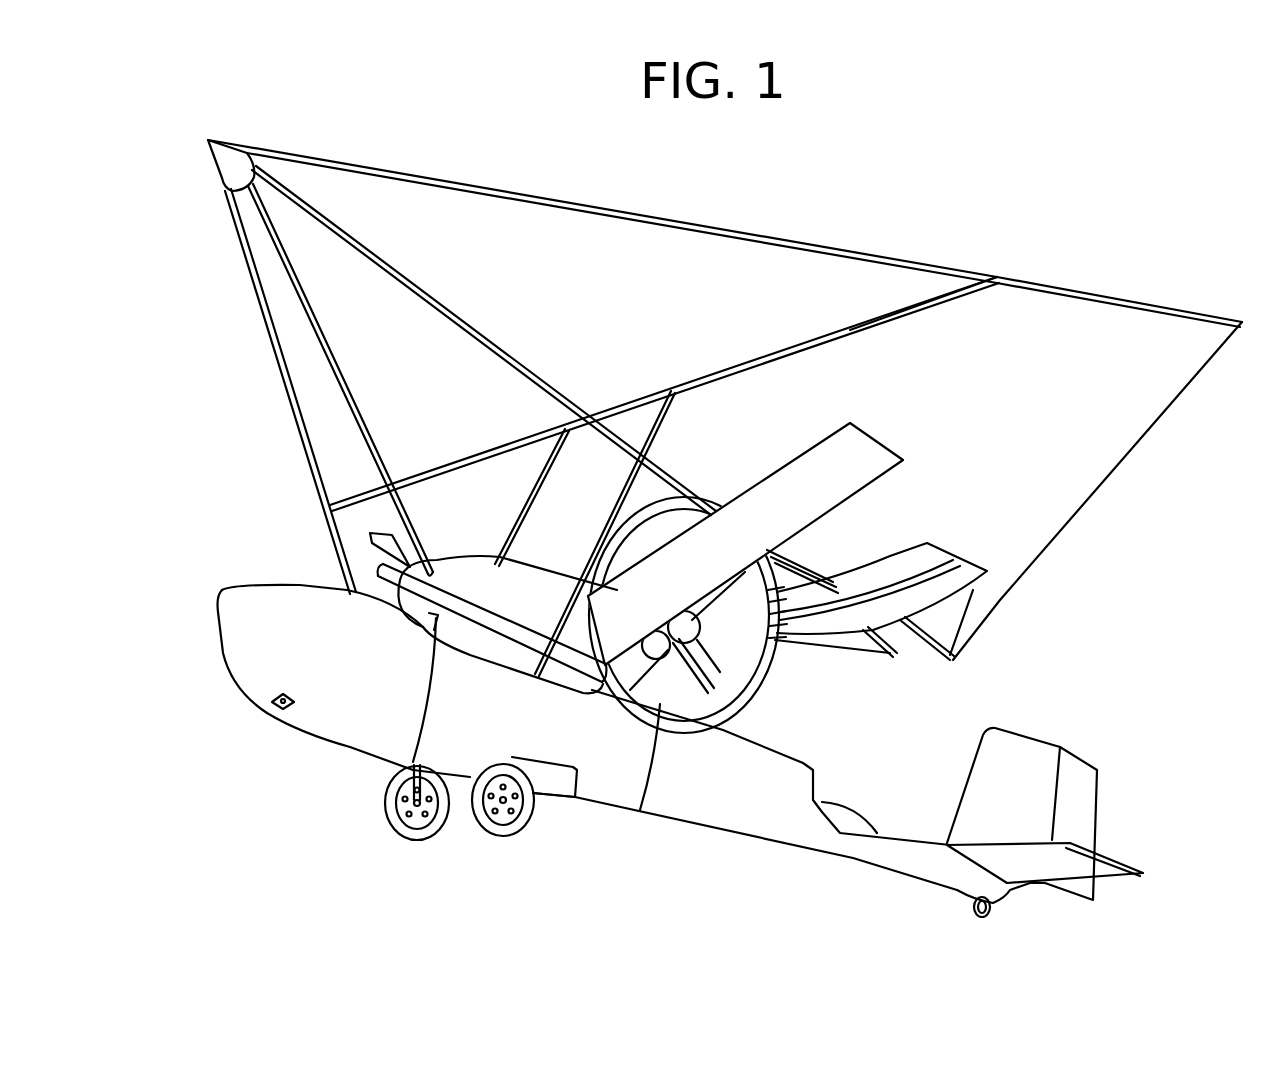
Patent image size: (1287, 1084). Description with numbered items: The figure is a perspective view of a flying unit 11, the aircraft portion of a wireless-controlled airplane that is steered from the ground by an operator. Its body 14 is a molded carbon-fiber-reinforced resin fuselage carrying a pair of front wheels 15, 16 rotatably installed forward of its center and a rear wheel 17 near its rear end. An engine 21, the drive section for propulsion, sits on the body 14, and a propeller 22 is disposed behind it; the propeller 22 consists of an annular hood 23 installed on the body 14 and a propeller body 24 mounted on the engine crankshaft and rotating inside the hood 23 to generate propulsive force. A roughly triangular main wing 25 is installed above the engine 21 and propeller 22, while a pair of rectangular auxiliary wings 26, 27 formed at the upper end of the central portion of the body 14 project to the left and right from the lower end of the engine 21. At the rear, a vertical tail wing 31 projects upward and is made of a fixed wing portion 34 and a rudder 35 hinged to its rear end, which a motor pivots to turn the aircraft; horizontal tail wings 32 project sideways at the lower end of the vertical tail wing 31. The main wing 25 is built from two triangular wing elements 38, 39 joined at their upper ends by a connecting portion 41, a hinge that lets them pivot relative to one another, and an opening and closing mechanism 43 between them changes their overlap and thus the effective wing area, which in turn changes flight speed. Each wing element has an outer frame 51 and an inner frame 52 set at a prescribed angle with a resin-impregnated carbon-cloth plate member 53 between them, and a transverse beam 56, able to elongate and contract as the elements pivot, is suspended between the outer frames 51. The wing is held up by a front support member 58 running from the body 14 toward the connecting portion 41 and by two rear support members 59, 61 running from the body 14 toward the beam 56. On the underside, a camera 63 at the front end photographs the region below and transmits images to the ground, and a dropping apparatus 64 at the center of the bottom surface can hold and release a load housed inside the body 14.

The flying unit 11 is at (1046, 262).
The body 14 is at (648, 820).
The front wheel 15 is at (405, 830).
The front wheel 16 is at (494, 830).
The rear wheel 17 is at (974, 908).
The engine 21 is at (466, 567).
The propeller 22 is at (675, 690).
The annular hood 23 is at (767, 670).
The propeller body 24 is at (710, 683).
The main wing 25 is at (562, 196).
The auxiliary wing 26 is at (375, 540).
The auxiliary wing 27 is at (850, 425).
The vertical tail wing 31 is at (1038, 725).
The horizontal tail wing 32 is at (1118, 870).
The fixed wing portion 34 is at (965, 772).
The rudder 35 is at (1087, 810).
The wing element 38 is at (312, 380).
The wing element 39 is at (703, 265).
The connecting portion 41 is at (247, 147).
The opening and closing mechanism 43 is at (960, 583).
The outer frame 51 is at (1147, 300).
The inner frame 52 is at (890, 657).
The plate member 53 is at (1100, 467).
The beam 56 is at (935, 300).
The front support member 58 is at (287, 272).
The rear support member 59 is at (465, 450).
The rear support member 61 is at (660, 423).
The camera 63 is at (284, 709).
The dropping apparatus 64 is at (572, 792).